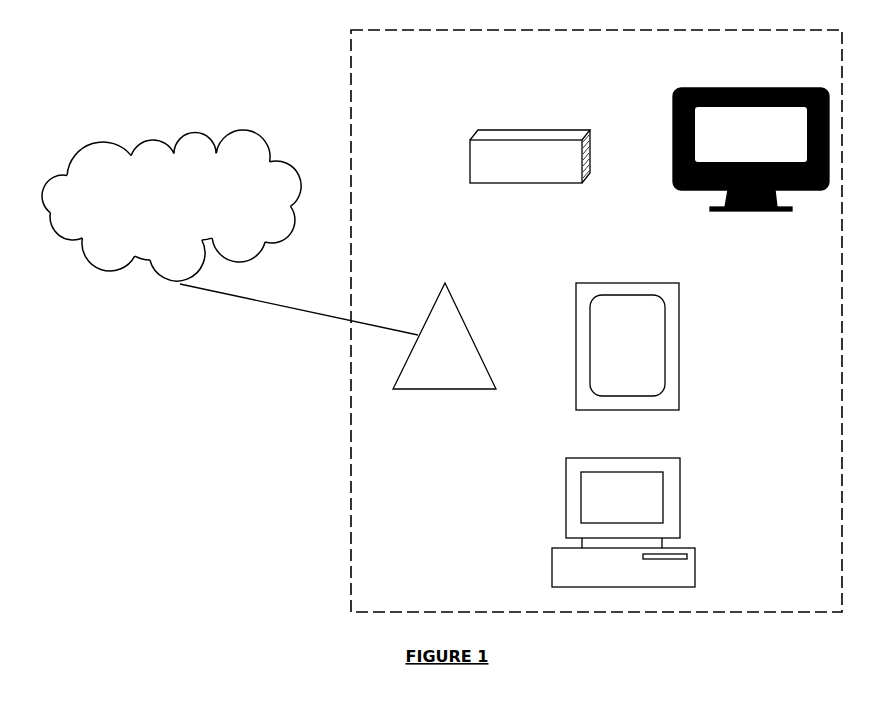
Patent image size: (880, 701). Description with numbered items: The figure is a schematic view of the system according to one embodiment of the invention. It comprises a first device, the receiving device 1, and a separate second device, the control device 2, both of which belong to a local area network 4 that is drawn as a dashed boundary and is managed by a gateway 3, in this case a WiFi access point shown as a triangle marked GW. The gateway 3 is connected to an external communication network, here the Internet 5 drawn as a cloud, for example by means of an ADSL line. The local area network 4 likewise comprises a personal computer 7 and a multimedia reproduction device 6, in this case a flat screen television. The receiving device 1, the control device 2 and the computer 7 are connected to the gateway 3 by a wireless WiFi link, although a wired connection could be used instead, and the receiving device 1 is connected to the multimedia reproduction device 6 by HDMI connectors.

The receiving device 1 is at (567, 130).
The control device 2 is at (680, 357).
The gateway 3 is at (457, 389).
The local area network 4 is at (351, 513).
The Internet 5 is at (171, 205).
The multimedia reproduction device 6 is at (757, 203).
The personal computer 7 is at (566, 526).